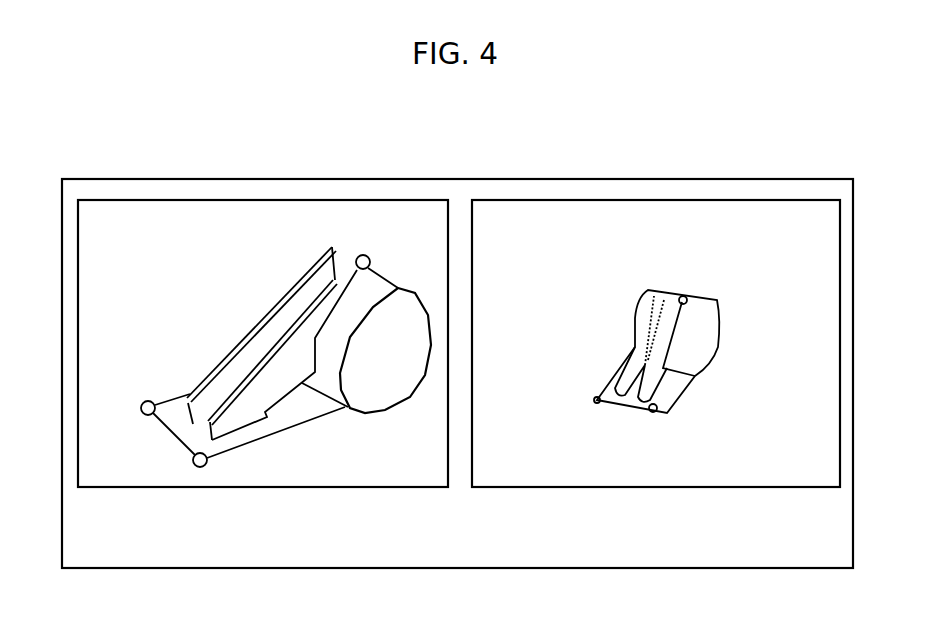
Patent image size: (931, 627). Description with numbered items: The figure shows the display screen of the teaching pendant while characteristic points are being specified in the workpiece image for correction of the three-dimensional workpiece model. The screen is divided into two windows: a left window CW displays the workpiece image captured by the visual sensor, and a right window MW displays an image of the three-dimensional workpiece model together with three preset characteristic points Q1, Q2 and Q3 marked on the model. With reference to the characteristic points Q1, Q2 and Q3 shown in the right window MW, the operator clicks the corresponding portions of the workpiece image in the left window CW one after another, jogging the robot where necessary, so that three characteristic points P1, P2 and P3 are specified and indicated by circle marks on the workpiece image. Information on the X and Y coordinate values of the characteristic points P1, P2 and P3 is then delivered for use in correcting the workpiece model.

The left window CW is at (234, 200).
The right window MW is at (601, 200).
The characteristic point P1 is at (207, 462).
The characteristic point P2 is at (370, 262).
The characteristic point P3 is at (148, 401).
The characteristic point Q1 is at (657, 410).
The characteristic point Q2 is at (685, 296).
The characteristic point Q3 is at (597, 400).